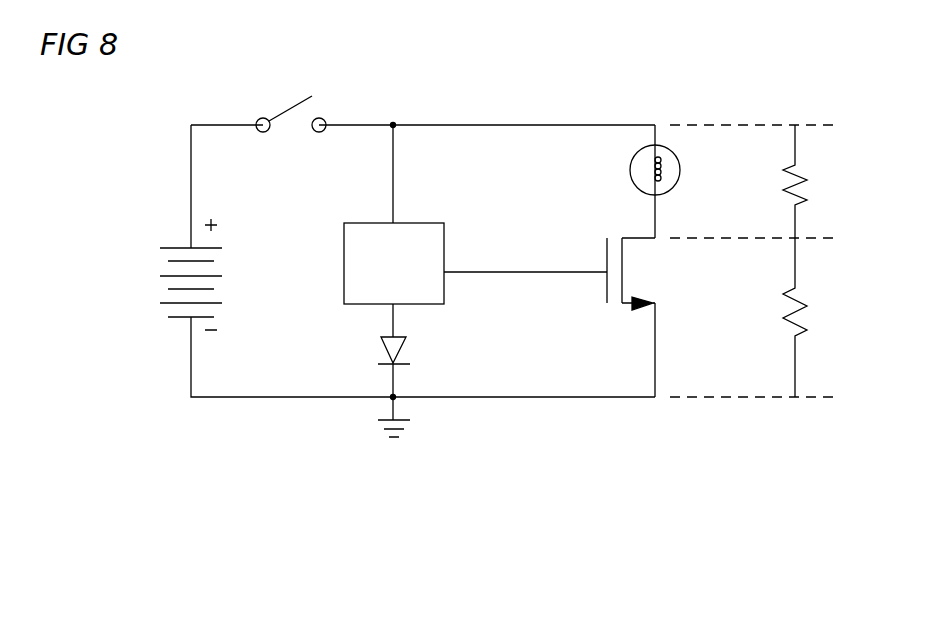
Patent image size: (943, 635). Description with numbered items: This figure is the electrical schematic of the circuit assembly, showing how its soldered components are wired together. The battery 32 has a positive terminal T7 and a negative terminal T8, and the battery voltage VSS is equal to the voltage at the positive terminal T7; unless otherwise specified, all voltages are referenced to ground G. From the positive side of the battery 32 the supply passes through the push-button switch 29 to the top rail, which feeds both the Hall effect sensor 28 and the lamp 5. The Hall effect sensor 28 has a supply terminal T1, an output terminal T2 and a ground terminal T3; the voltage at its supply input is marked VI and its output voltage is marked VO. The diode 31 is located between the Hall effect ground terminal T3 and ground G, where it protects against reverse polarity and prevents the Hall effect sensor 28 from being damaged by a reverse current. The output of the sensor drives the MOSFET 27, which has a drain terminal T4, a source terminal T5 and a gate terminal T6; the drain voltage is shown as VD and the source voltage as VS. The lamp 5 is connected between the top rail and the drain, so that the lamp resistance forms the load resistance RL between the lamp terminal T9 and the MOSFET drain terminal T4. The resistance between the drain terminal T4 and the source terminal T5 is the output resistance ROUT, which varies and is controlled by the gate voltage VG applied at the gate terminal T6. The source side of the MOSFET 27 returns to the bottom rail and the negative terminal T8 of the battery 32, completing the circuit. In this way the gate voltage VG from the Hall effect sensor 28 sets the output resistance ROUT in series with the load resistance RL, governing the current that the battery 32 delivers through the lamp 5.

The push-button switch 29 is at (293, 103).
The Hall effect sensor 28 is at (410, 235).
The lamp 5 is at (675, 167).
The MOSFET 27 is at (622, 268).
The battery 32 is at (183, 248).
The diode 31 is at (397, 365).
The supply terminal T1 is at (393, 213).
The output terminal T2 is at (473, 272).
The ground terminal T3 is at (393, 315).
The drain terminal T4 is at (655, 230).
The source terminal T5 is at (655, 343).
The gate terminal T6 is at (572, 272).
The positive terminal T7 is at (191, 218).
The negative terminal T8 is at (191, 343).
The lamp terminal T9 is at (655, 137).
The ground G is at (393, 397).
The input voltage VI is at (394, 223).
The battery voltage VSS is at (190, 194).
The drain voltage VD is at (655, 218).
The output voltage VO is at (450, 272).
The gate voltage VG is at (583, 272).
The source voltage VS is at (655, 317).
The load resistance RL is at (813, 181).
The output resistance ROUT is at (823, 317).